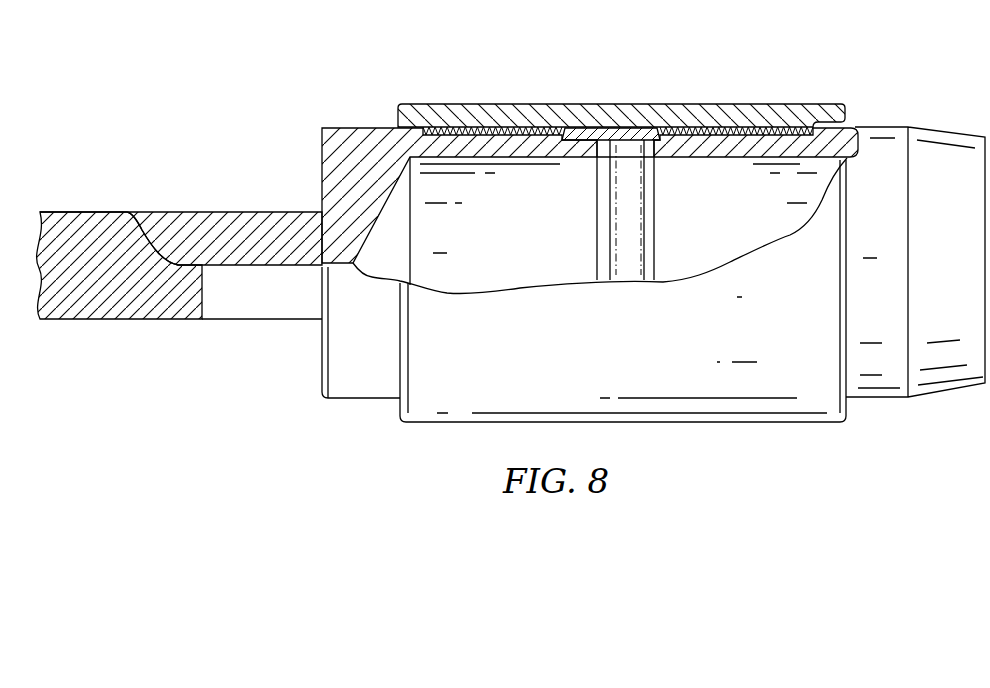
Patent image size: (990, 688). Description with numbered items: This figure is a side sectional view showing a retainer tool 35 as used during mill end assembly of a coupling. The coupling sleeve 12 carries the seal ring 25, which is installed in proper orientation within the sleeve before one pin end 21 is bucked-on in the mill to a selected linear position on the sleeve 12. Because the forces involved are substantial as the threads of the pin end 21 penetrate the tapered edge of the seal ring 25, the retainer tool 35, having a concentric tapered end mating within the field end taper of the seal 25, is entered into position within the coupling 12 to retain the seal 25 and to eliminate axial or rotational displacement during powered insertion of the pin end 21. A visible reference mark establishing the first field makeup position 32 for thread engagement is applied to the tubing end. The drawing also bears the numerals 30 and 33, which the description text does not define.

The connector assembly 30 is at (258, 170).
The cable jacket 33 is at (145, 307).
The annular gap 32 is at (273, 305).
The nut flange 35 is at (372, 128).
The outer sleeve 12 is at (713, 104).
The seal ring 25 is at (625, 147).
The nut body 21 is at (903, 127).